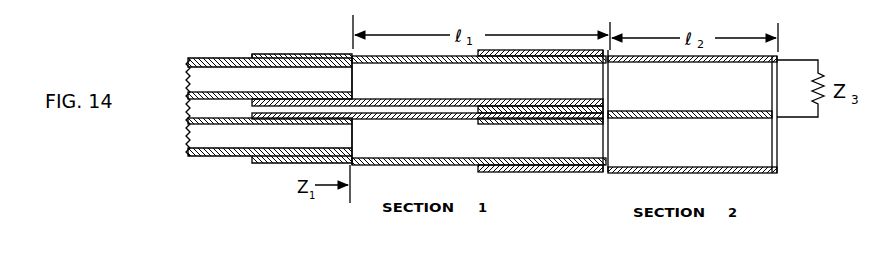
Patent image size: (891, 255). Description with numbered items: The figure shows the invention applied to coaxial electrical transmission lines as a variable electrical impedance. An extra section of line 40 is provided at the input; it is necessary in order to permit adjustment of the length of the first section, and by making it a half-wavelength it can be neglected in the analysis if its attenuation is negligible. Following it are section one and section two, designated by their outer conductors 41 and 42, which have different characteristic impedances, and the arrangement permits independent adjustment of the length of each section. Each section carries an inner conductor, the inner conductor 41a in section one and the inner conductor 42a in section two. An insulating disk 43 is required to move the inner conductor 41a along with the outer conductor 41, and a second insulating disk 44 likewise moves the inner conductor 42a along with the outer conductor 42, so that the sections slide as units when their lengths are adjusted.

The extra section of line 40 is at (208, 58).
The outer conductor of section 1 41 is at (377, 56).
The inner conductor of section 1 41a is at (405, 99).
The outer conductor of section 2 42 is at (710, 62).
The inner conductor of section 2 42a is at (650, 111).
The insulating disk 43 is at (600, 87).
The insulating disk 44 is at (770, 138).